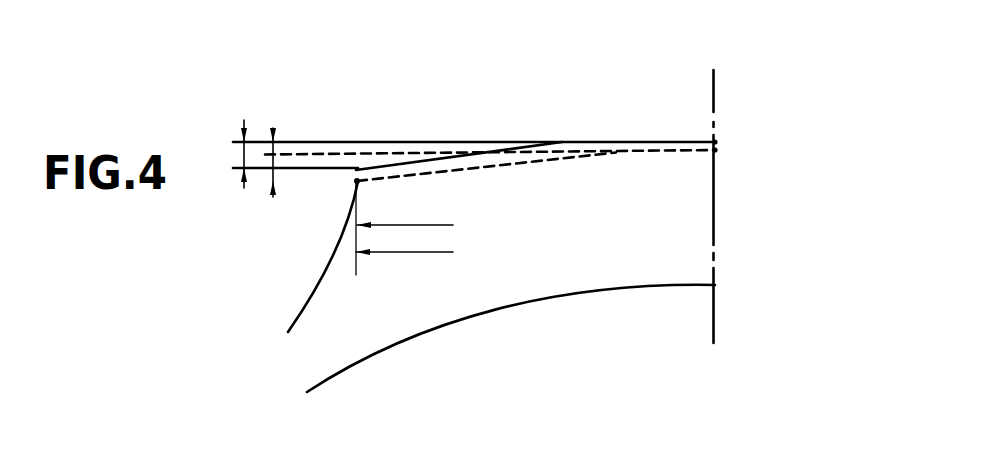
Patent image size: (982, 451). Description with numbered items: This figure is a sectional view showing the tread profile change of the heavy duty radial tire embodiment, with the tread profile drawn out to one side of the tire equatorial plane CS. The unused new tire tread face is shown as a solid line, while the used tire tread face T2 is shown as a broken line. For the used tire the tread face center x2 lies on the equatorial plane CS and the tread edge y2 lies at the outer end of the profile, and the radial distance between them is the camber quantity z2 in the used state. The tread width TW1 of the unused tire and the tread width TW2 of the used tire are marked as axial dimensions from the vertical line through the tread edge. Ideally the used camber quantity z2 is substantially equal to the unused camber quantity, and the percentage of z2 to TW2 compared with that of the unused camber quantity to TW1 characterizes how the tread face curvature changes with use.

The used tire tread face T2 is at (456, 166).
The tread edge of used tire y2 is at (355, 182).
The camber quantity in used state z2 is at (270, 173).
The tread face center of used tire x2 is at (715, 150).
The tire equatorial plane CS is at (717, 225).
The tread width of unused tire TW1 is at (436, 228).
The tread width of used tire TW2 is at (439, 253).